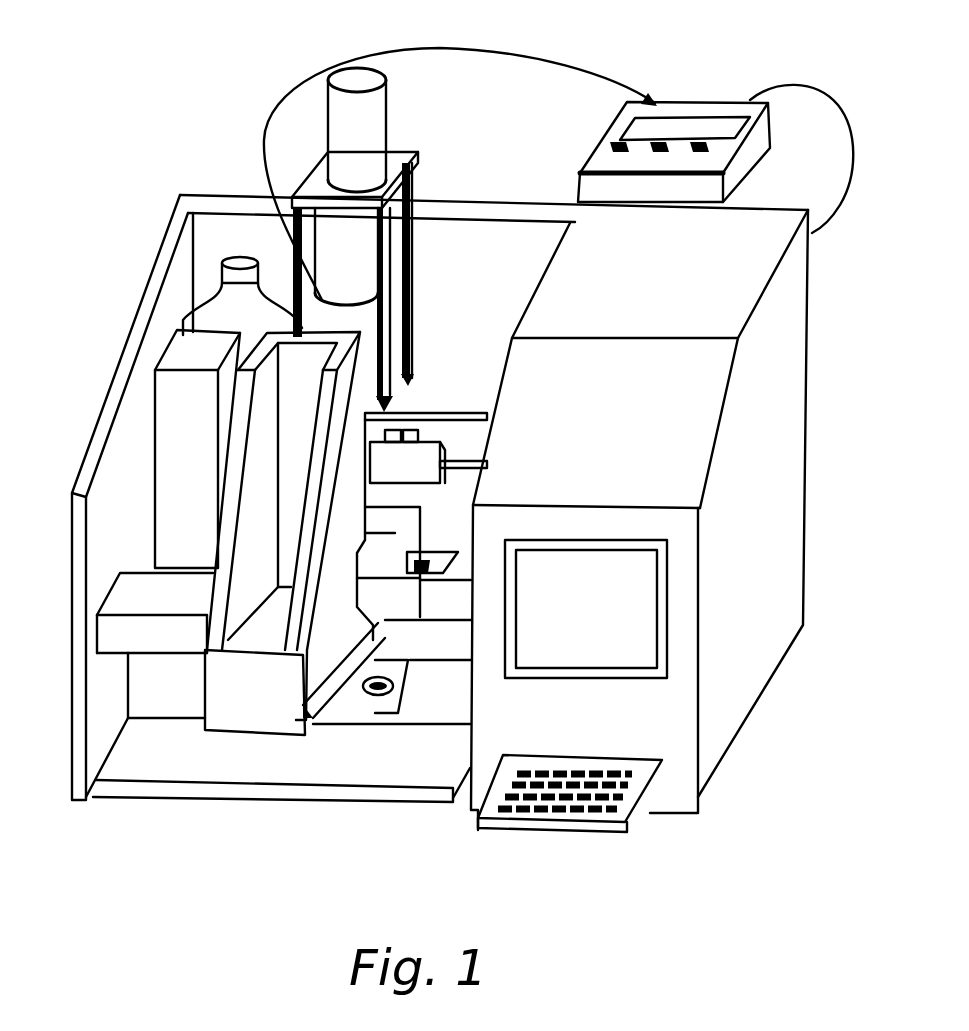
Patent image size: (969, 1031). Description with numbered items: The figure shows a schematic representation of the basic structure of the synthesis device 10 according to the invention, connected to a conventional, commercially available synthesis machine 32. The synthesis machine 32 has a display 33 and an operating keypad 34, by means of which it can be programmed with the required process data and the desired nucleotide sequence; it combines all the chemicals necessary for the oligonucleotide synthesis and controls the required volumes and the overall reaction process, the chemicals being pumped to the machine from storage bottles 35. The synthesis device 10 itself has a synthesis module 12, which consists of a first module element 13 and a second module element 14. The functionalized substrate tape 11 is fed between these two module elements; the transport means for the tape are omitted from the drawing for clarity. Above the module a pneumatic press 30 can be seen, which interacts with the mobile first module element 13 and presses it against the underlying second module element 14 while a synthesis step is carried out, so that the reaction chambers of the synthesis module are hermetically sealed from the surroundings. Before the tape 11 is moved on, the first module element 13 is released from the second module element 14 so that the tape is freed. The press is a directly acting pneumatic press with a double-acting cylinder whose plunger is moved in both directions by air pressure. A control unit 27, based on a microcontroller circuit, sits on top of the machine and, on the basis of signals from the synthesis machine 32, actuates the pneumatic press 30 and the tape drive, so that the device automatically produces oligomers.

The synthesis device 10 is at (100, 138).
The functionalized substrate tape 11 is at (636, 463).
The synthesis module 12 is at (621, 446).
The first module element 13 is at (397, 553).
The second module element 14 is at (373, 597).
The control unit 27 is at (697, 110).
The pneumatic press 30 is at (333, 247).
The synthesis machine 32 is at (748, 532).
The display 33 is at (667, 633).
The operating keypad 34 is at (630, 796).
The storage bottles 35 is at (238, 313).